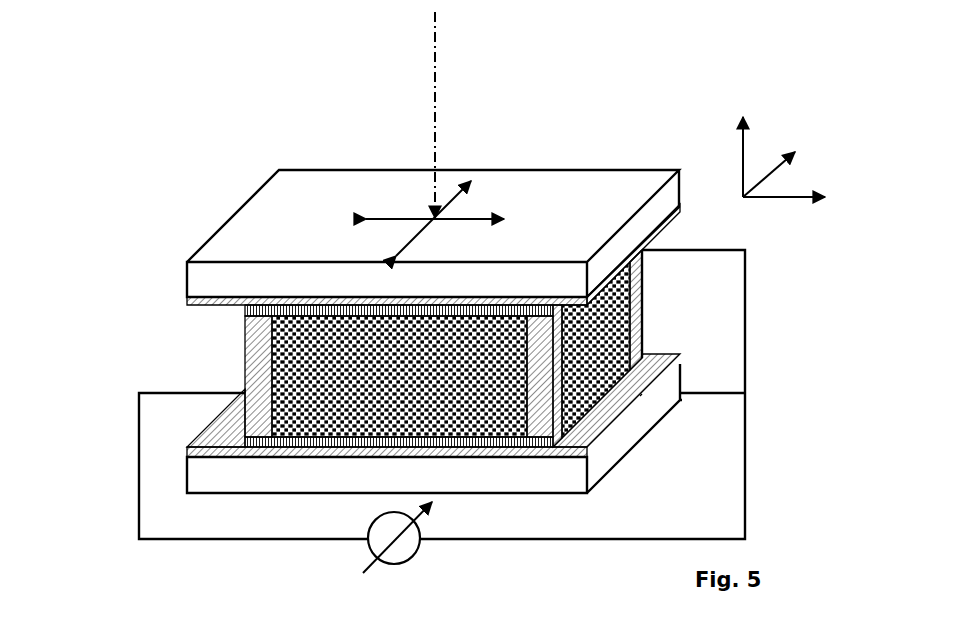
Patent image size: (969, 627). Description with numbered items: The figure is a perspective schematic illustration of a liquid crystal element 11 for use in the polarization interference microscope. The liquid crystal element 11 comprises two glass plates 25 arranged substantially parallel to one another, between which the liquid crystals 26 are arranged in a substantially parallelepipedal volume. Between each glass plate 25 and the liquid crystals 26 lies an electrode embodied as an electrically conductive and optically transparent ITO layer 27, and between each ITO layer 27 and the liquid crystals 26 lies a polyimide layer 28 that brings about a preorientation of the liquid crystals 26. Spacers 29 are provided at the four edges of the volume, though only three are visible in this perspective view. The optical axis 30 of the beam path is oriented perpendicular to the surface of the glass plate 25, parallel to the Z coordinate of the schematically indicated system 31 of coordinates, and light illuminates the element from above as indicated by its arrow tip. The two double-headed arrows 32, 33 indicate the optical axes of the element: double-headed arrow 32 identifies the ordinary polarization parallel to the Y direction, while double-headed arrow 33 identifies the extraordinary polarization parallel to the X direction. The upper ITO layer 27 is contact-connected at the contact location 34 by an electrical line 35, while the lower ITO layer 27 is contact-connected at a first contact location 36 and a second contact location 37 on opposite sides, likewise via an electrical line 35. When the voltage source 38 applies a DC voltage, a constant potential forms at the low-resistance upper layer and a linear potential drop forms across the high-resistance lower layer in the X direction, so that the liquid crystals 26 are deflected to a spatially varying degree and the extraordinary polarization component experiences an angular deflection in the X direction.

The liquid crystal element 11 is at (318, 150).
The glass plate 25 is at (274, 210).
The liquid crystals 26 is at (315, 407).
The ITO layer 27 is at (187, 302).
The polyimide layer 28 is at (253, 312).
The spacer 29 is at (258, 372).
The optical axis 30 is at (438, 70).
The system of coordinates 31 is at (790, 106).
The double-headed arrow 32 is at (453, 190).
The double-headed arrow 33 is at (410, 217).
The contact location 34 is at (643, 252).
The electrical line 35 is at (745, 355).
The first contact location 36 is at (637, 398).
The second contact location 37 is at (245, 390).
The voltage source 38 is at (420, 556).